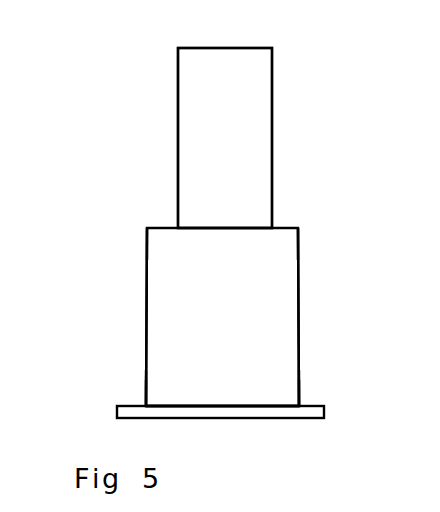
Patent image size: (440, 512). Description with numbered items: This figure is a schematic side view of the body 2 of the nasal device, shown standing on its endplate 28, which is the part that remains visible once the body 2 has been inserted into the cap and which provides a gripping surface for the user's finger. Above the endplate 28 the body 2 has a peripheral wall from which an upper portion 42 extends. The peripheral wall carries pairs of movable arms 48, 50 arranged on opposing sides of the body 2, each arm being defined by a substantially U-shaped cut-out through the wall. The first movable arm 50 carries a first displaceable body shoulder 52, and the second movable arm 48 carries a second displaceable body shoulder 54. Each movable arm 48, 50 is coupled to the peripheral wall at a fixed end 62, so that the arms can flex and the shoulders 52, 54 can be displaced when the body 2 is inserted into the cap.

The body 2 is at (104, 96).
The upper member 42 is at (255, 108).
The second movable arm 48 is at (143, 263).
The second displaceable body shoulder 54 is at (145, 286).
The fixed end 62 is at (147, 252).
The first movable arm 50 is at (142, 381).
The first displaceable body shoulder 52 is at (146, 398).
The endplate 28 is at (296, 418).